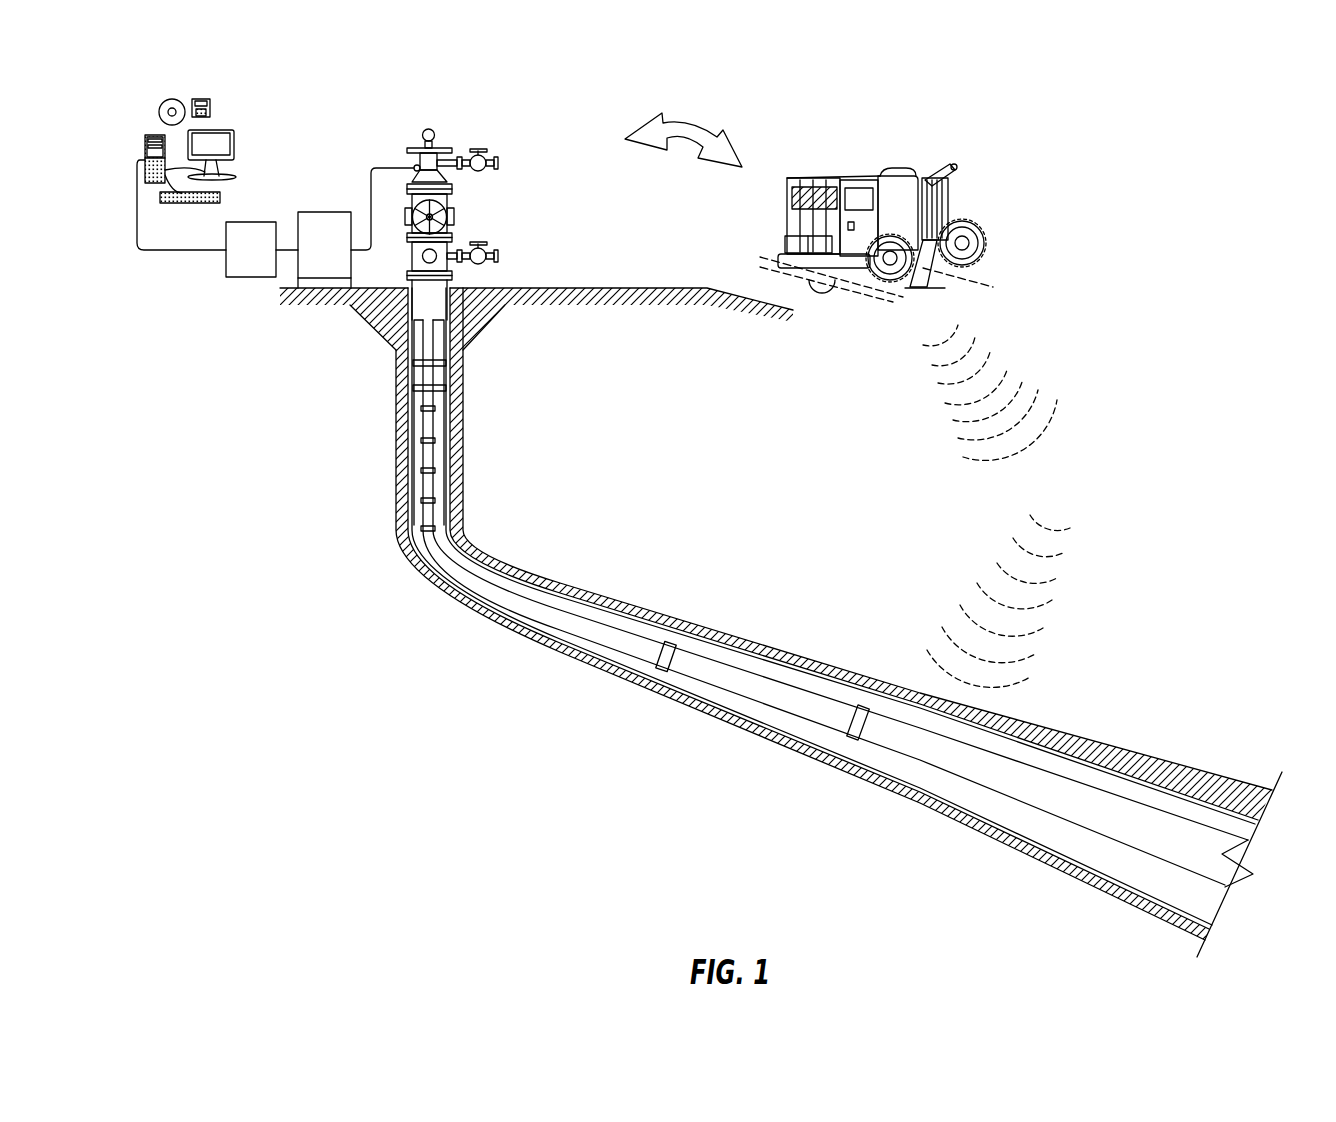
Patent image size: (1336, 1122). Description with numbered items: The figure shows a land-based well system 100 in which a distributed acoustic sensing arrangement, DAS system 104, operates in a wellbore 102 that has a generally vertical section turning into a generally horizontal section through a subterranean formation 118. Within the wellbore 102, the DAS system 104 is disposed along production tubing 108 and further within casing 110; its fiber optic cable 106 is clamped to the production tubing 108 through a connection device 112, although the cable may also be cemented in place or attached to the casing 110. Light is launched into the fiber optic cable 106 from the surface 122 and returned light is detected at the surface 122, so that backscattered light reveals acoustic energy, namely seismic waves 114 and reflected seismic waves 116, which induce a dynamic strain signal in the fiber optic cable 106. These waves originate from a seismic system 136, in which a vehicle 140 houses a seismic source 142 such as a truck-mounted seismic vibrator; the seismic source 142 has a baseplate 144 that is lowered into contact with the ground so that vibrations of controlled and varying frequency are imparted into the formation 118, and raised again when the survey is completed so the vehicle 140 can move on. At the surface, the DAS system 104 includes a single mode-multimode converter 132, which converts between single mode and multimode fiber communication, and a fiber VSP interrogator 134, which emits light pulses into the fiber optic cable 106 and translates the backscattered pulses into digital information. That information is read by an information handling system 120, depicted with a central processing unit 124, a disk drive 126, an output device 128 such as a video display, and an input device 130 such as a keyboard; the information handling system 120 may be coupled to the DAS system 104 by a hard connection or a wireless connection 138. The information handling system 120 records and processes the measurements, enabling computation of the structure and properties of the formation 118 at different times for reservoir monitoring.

The well system 100 is at (478, 112).
The wellbore 102 is at (542, 345).
The DAS system 104 is at (220, 288).
The fiber optic cable 106 is at (414, 346).
The production tubing 108 is at (430, 397).
The casing 110 is at (414, 380).
The connection device 112 is at (440, 366).
The seismic waves 114 is at (950, 420).
The reflected seismic waves 116 is at (1025, 662).
The subterranean formation 118 is at (1082, 490).
The information handling system 120 is at (262, 113).
The surface 122 is at (560, 287).
The central processing unit 124 is at (155, 135).
The disk drive 126 is at (199, 98).
The output device 128 is at (234, 142).
The input device 130 is at (221, 197).
The single mode-multimode converter 132 is at (346, 262).
The fiber VSP interrogator 134 is at (273, 262).
The seismic system 136 is at (1043, 112).
The wireless connection 138 is at (687, 124).
The vehicle 140 is at (846, 174).
The seismic source 142 is at (925, 290).
The baseplate 144 is at (915, 285).